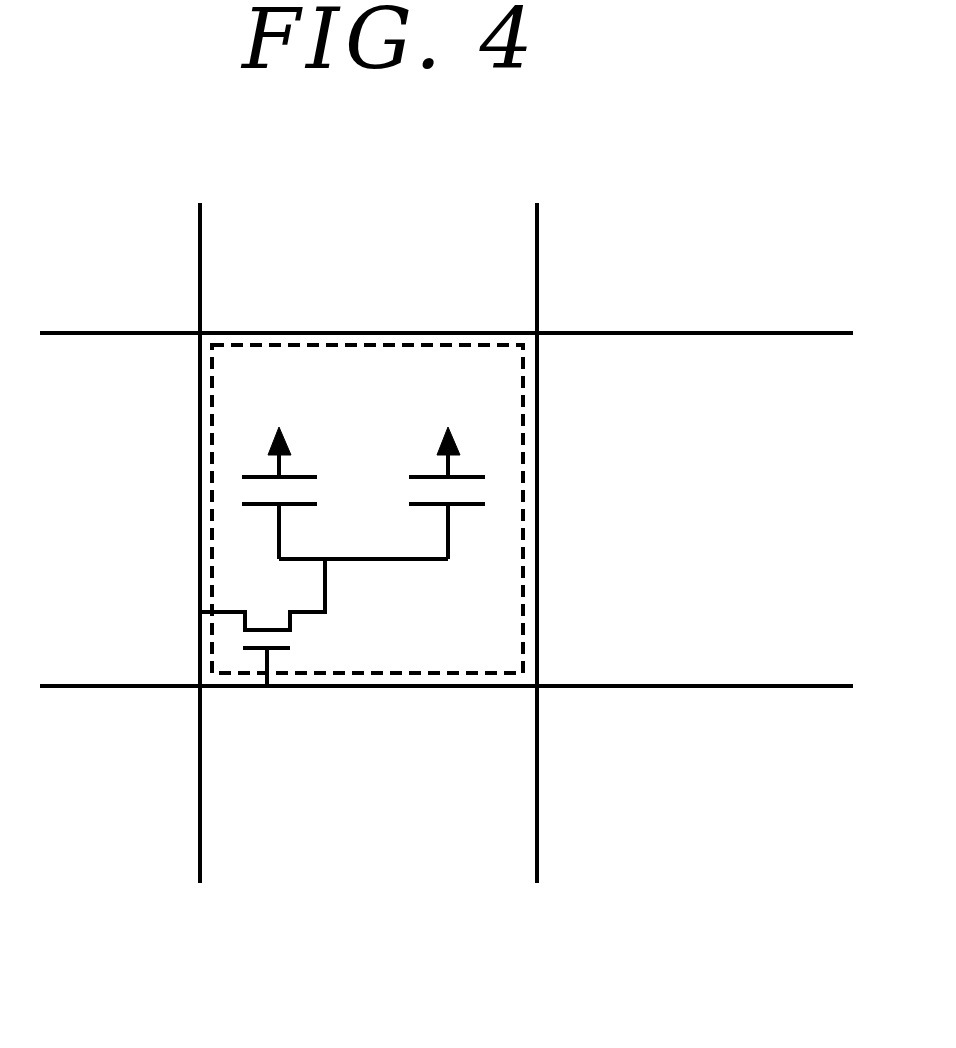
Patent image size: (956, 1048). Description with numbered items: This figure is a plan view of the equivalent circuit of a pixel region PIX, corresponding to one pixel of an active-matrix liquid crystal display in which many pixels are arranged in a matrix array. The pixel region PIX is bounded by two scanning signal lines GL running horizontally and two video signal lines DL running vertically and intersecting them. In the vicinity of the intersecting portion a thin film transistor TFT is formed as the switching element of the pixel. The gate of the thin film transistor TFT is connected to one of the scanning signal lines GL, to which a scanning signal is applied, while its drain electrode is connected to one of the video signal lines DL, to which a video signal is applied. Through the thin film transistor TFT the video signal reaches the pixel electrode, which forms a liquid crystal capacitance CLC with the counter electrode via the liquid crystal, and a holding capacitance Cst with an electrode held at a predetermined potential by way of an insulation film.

The video signal line DL is at (198, 270).
The scanning signal line GL is at (119, 689).
The pixel region PIX is at (350, 345).
The liquid crystal capacitance CLC is at (320, 488).
The holding capacitance Cst is at (493, 490).
The thin film transistor TFT is at (297, 643).